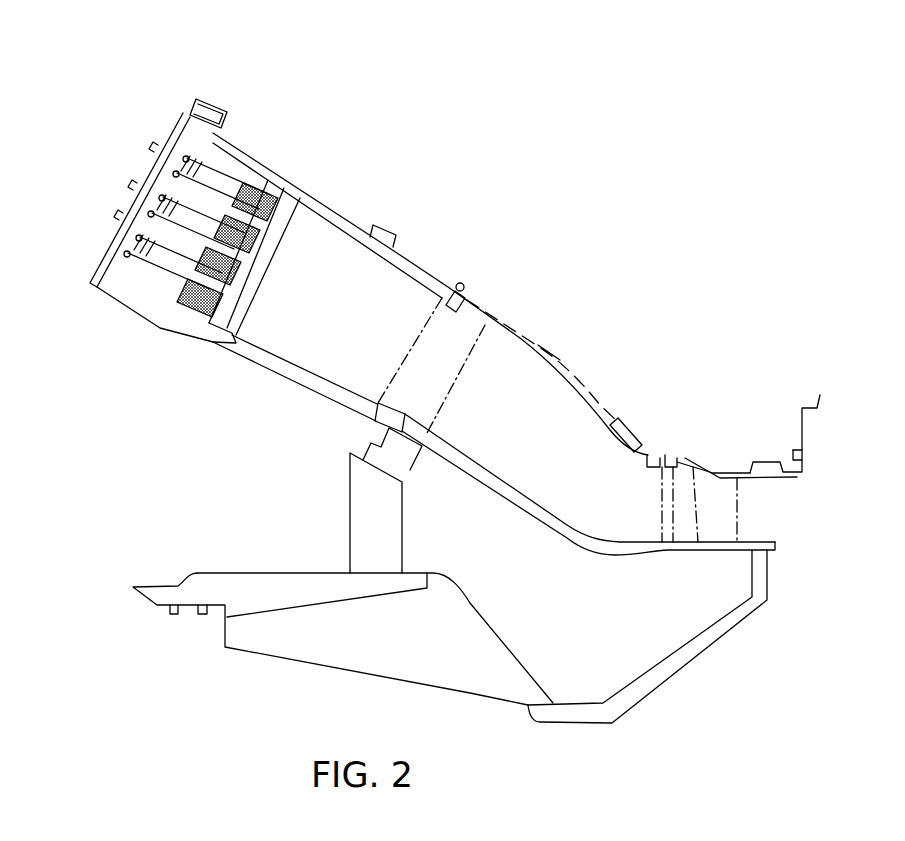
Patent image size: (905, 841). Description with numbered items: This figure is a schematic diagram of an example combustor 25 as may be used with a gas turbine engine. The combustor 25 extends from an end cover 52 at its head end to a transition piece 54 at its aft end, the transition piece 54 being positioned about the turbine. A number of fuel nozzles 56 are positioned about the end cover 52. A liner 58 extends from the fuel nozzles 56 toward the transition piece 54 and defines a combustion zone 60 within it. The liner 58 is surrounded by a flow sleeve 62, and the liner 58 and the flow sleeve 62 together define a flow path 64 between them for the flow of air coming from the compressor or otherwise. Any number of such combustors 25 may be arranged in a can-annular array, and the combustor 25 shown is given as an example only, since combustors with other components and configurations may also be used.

The combustor 25 is at (342, 108).
The end cover 52 is at (112, 238).
The transition piece 54 is at (600, 404).
The fuel nozzles 56 is at (197, 268).
The liner 58 is at (397, 250).
The combustion zone 60 is at (349, 307).
The flow sleeve 62 is at (537, 333).
The flow path 64 is at (488, 314).